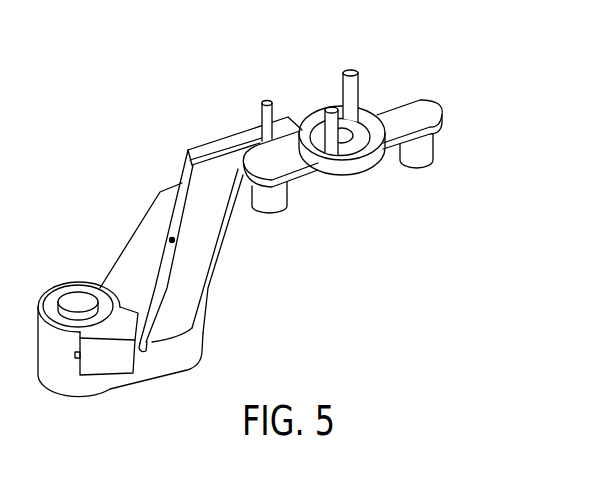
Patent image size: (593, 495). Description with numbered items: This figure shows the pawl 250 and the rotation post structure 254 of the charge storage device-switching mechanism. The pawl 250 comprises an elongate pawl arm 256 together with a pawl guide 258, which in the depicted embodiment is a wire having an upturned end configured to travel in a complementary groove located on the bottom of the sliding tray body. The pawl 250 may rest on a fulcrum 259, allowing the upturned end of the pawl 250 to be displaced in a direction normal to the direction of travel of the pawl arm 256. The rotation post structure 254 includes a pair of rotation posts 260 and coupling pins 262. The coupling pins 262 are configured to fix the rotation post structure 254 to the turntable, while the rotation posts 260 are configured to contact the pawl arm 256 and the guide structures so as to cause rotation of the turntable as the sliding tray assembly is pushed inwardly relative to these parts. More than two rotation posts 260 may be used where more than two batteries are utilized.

The pawl 250 is at (240, 211).
The rotation post structure 254 is at (394, 91).
The pawl arm 256 is at (228, 136).
The pawl guide 258 is at (272, 102).
The fulcrum 259 is at (176, 243).
The rotation posts 260 is at (269, 208).
The coupling pins 262 is at (328, 109).